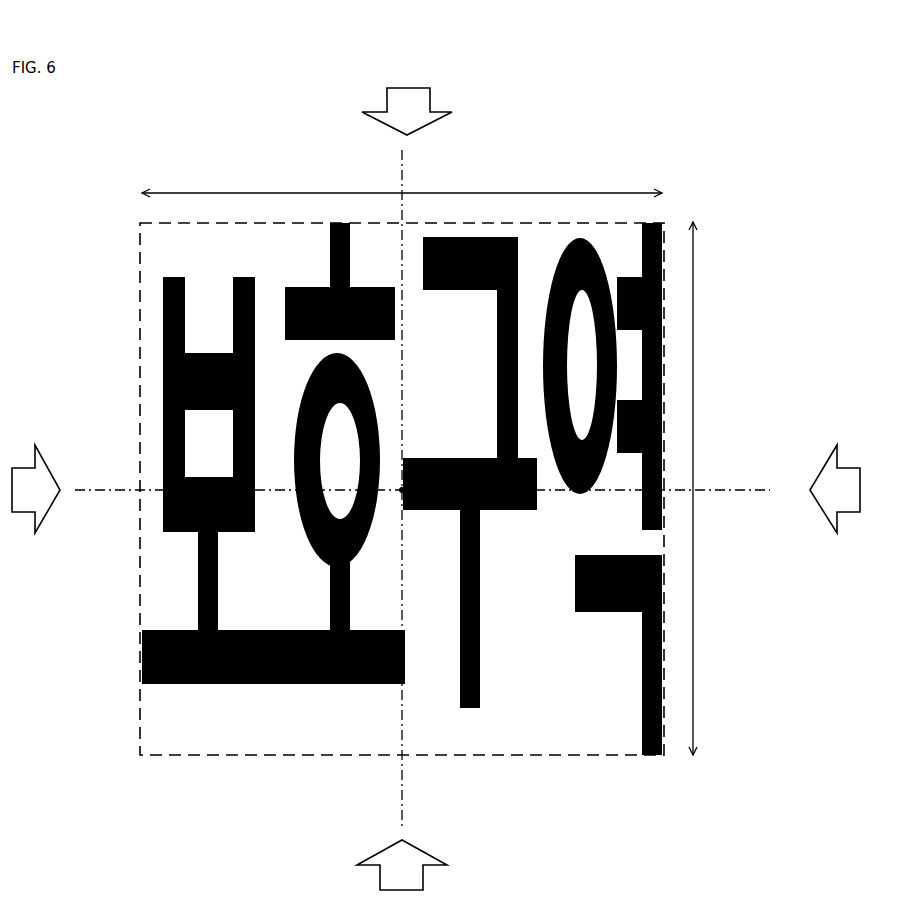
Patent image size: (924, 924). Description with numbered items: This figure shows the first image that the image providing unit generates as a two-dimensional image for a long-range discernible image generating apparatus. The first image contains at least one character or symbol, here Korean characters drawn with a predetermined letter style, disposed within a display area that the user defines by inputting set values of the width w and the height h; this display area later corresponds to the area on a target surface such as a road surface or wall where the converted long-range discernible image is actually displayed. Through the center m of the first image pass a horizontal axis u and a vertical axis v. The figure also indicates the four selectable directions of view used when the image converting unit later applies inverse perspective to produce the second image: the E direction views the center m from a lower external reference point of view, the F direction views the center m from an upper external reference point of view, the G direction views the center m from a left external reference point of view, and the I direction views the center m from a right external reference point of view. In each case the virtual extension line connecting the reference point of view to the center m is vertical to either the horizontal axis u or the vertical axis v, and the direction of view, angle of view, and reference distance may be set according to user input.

The center of the first image m is at (402, 492).
The horizontal axis u is at (434, 490).
The vertical axis v is at (413, 489).
The width w is at (402, 186).
The height h is at (702, 488).
The F direction F is at (407, 111).
The E direction E is at (402, 865).
The G direction G is at (36, 489).
The I direction I is at (835, 489).